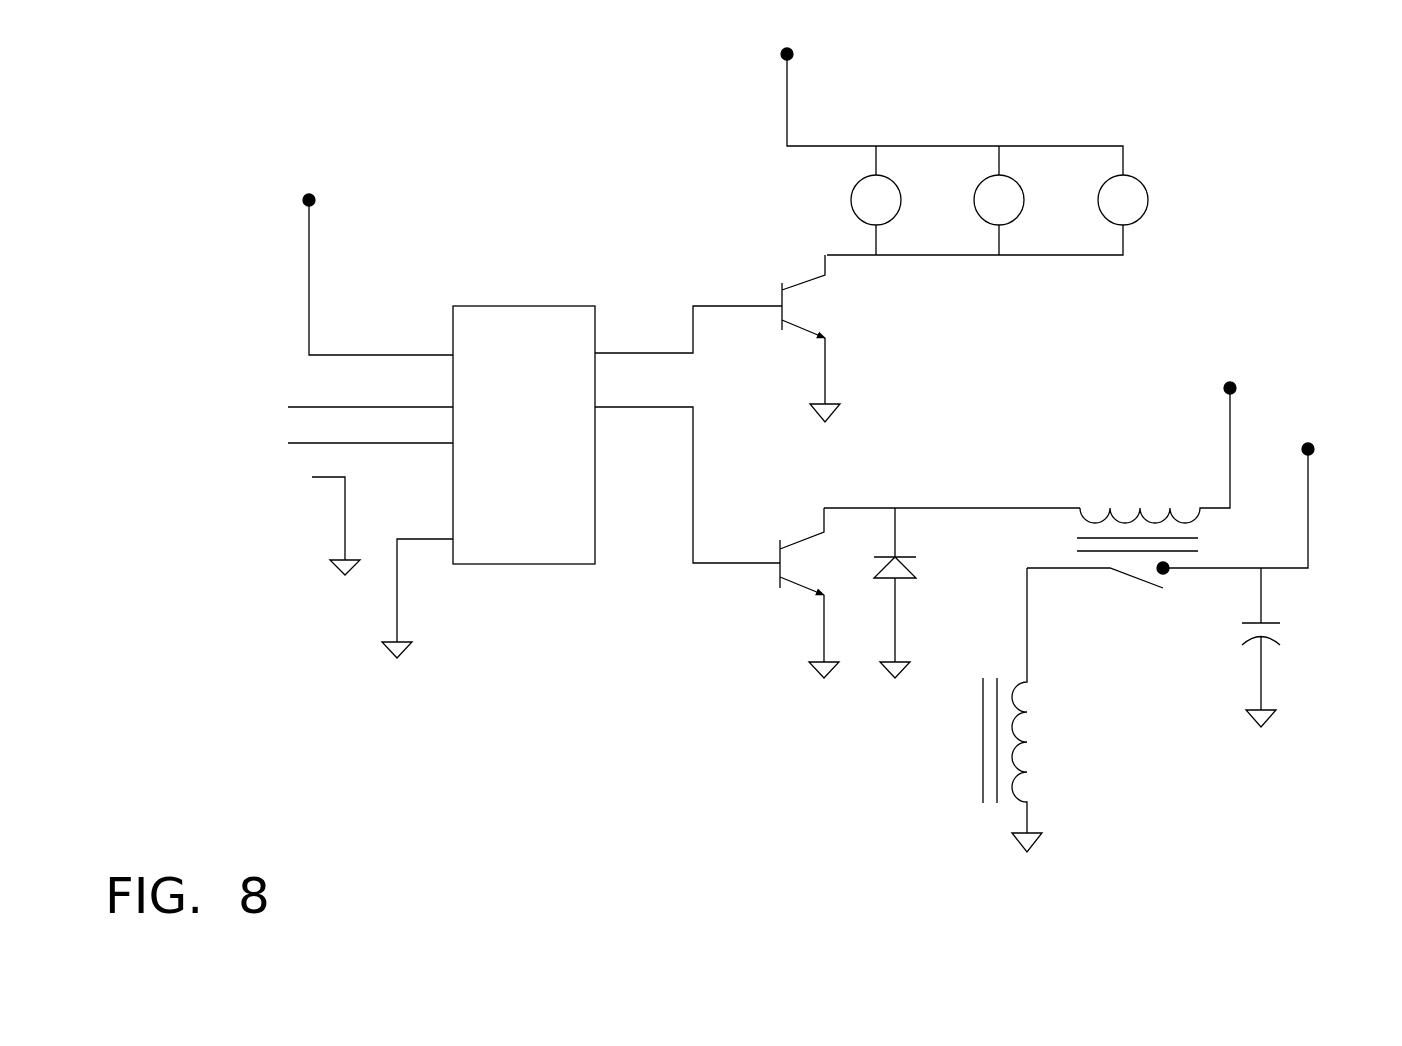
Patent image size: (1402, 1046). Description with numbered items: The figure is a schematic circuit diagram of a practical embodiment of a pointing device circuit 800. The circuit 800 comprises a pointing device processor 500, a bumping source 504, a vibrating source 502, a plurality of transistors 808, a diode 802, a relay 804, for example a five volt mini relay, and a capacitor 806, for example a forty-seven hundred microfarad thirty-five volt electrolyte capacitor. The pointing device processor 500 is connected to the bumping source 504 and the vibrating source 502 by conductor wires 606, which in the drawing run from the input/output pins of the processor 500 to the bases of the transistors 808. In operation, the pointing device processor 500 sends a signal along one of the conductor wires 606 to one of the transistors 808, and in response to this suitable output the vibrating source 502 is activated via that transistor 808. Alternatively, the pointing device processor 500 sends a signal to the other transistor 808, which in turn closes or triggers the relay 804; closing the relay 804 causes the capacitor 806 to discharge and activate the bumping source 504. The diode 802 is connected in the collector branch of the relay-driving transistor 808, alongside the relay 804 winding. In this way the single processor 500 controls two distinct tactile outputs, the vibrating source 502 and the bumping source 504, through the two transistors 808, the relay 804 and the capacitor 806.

The pointing device circuit 800 is at (250, 243).
The pointing device processor 500 is at (535, 564).
The vibrating source 502 is at (851, 195).
The bumping source 504 is at (1018, 712).
The conductor wires 606 is at (717, 306).
The diode 802 is at (907, 557).
The relay 804 is at (1140, 515).
The capacitor 806 is at (1250, 622).
The transistors 808 is at (792, 323).